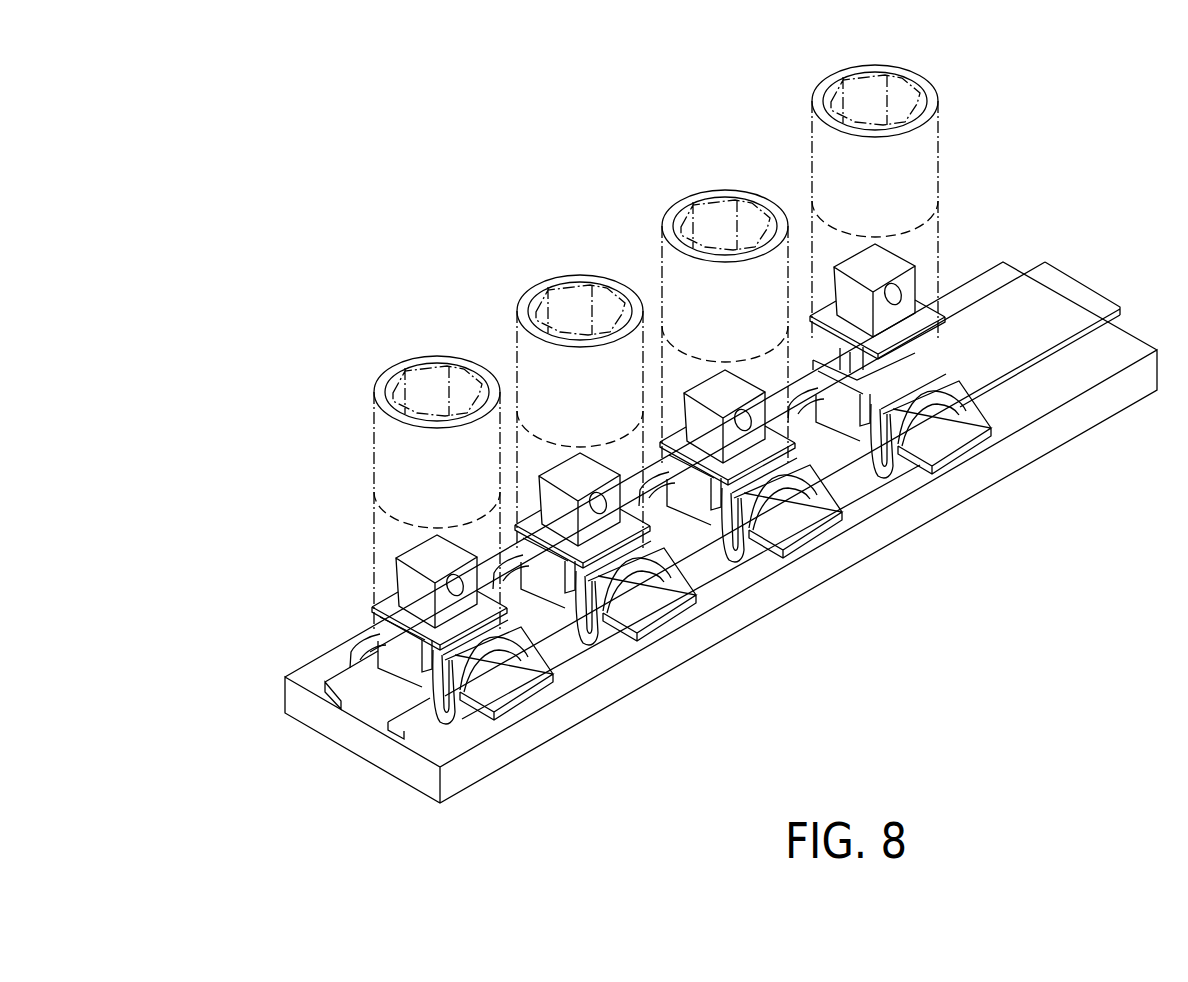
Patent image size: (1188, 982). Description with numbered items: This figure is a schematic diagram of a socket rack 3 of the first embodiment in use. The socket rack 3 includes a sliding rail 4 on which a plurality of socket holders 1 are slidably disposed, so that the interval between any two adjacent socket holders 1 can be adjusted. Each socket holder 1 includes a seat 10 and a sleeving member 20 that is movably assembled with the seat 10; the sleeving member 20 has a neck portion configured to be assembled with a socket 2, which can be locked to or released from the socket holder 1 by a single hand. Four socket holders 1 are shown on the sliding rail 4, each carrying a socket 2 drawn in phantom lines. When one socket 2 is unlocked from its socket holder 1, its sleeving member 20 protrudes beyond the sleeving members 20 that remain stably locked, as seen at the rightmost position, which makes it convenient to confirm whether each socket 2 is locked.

The socket holder 1 is at (371, 633).
The socket 2 is at (398, 475).
The socket rack 3 is at (255, 697).
The sliding rail 4 is at (1025, 412).
The seat 10 is at (840, 413).
The sleeving member 20 is at (937, 312).